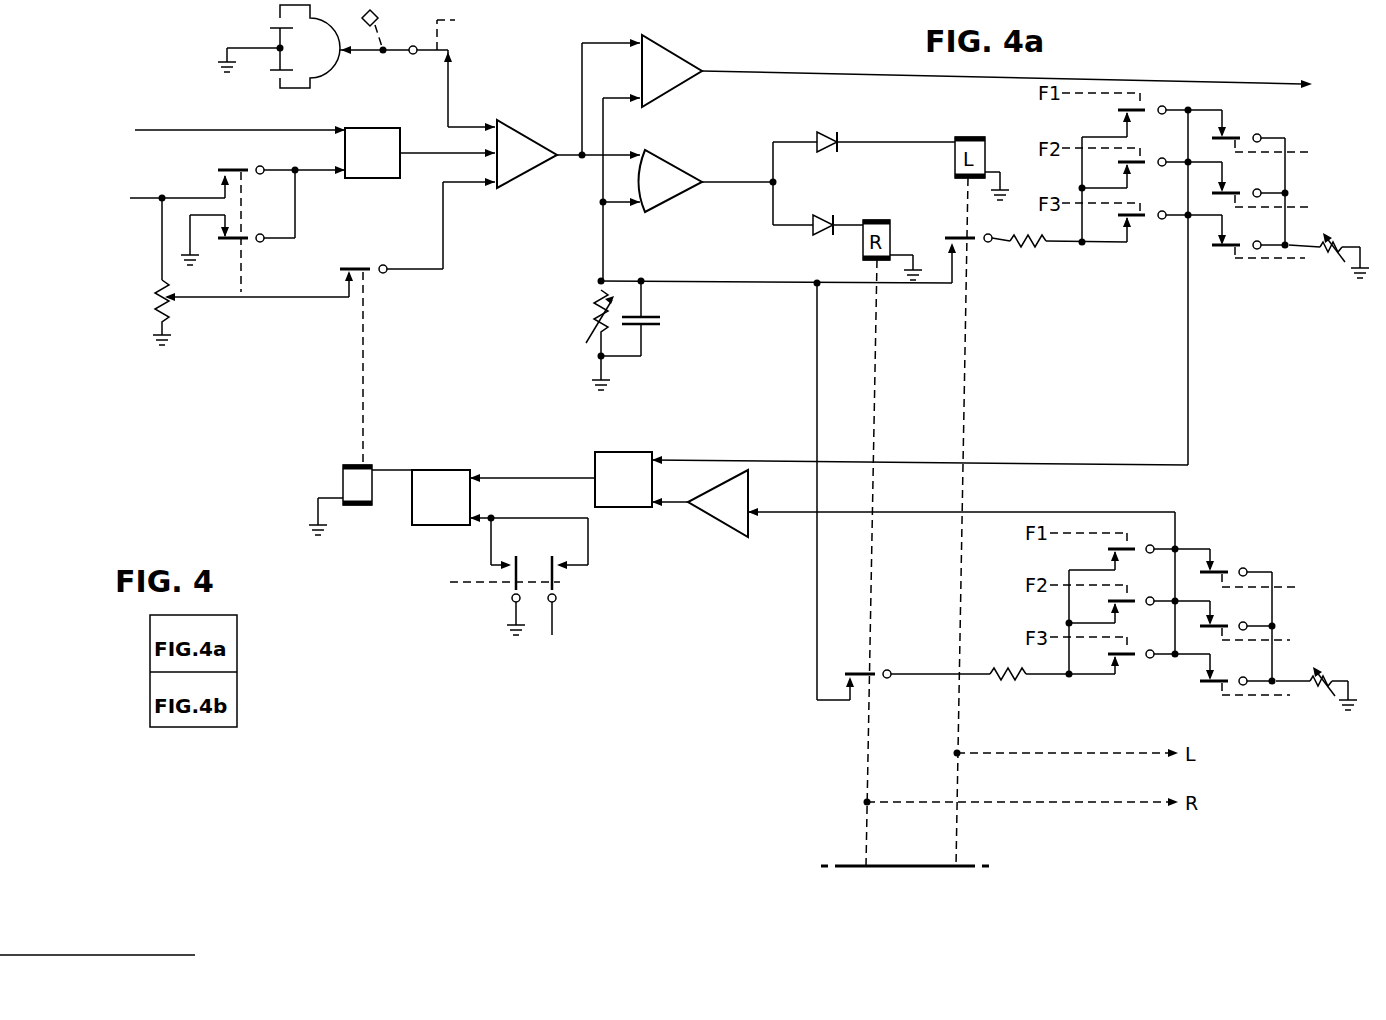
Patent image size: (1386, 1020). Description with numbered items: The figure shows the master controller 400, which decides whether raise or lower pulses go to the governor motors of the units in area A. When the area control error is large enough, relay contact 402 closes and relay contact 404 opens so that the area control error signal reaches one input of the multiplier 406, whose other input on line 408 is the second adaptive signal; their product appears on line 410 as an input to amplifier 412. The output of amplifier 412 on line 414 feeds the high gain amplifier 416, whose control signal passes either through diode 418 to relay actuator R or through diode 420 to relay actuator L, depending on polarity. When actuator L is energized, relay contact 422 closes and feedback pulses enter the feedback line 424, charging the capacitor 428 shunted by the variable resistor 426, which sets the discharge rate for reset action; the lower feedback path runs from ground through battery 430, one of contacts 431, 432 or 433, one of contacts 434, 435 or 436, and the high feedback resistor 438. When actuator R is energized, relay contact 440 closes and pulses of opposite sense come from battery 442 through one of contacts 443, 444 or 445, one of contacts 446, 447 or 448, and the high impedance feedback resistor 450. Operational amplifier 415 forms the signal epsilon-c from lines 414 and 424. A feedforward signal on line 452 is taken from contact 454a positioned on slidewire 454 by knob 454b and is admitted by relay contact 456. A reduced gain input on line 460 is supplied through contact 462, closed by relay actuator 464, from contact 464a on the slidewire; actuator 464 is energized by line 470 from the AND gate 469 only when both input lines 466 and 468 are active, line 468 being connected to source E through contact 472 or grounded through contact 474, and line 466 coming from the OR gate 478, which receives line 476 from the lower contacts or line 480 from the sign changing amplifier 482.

The master controller 400 is at (772, 117).
The relay contact 402 is at (246, 166).
The relay contact 404 is at (245, 244).
The multiplier 406 is at (368, 128).
The line 408 is at (243, 130).
The line 410 is at (426, 153).
The amplifier 412 is at (536, 172).
The line 414 is at (621, 158).
The operational amplifier 415 is at (681, 53).
The high gain amplifier 416 is at (681, 164).
The diode 418 is at (826, 236).
The diode 420 is at (830, 153).
The relay contact 422 is at (976, 247).
The feedback line 424 is at (713, 283).
The variable resistor 426 is at (590, 313).
The capacitor 428 is at (660, 326).
The battery 430 is at (1331, 239).
The relay contact 431 is at (1233, 133).
The relay contact 432 is at (1233, 188).
The relay contact 433 is at (1233, 242).
The relay contact 434 is at (1137, 120).
The relay contact 435 is at (1137, 172).
The relay contact 436 is at (1135, 225).
The feedback resistor 438 is at (1031, 253).
The relay contact 440 is at (877, 670).
The battery 442 is at (1322, 670).
The relay contact 443 is at (1222, 568).
The relay contact 444 is at (1219, 622).
The relay contact 445 is at (1217, 678).
The relay contact 446 is at (1125, 558).
The relay contact 447 is at (1127, 610).
The relay contact 448 is at (1122, 663).
The feedback resistor 450 is at (1013, 685).
The line 452 is at (447, 104).
The slidewire 454 is at (340, 14).
The contact 454a is at (346, 55).
The knob 454b is at (380, 18).
The relay contact 456 is at (445, 50).
The line 460 is at (446, 239).
The relay contact 462 is at (369, 262).
The relay actuator / slidewire 464 is at (155, 292).
The contact 464a is at (187, 301).
The input line 466 is at (545, 480).
The input line 468 is at (489, 515).
The AND gate 469 is at (448, 470).
The line 470 is at (388, 470).
The contact 472 is at (560, 589).
The contact 474 is at (511, 591).
The line 476 is at (713, 460).
The OR gate 478 is at (625, 452).
The line 480 is at (683, 506).
The sign changing amplifier 482 is at (723, 526).